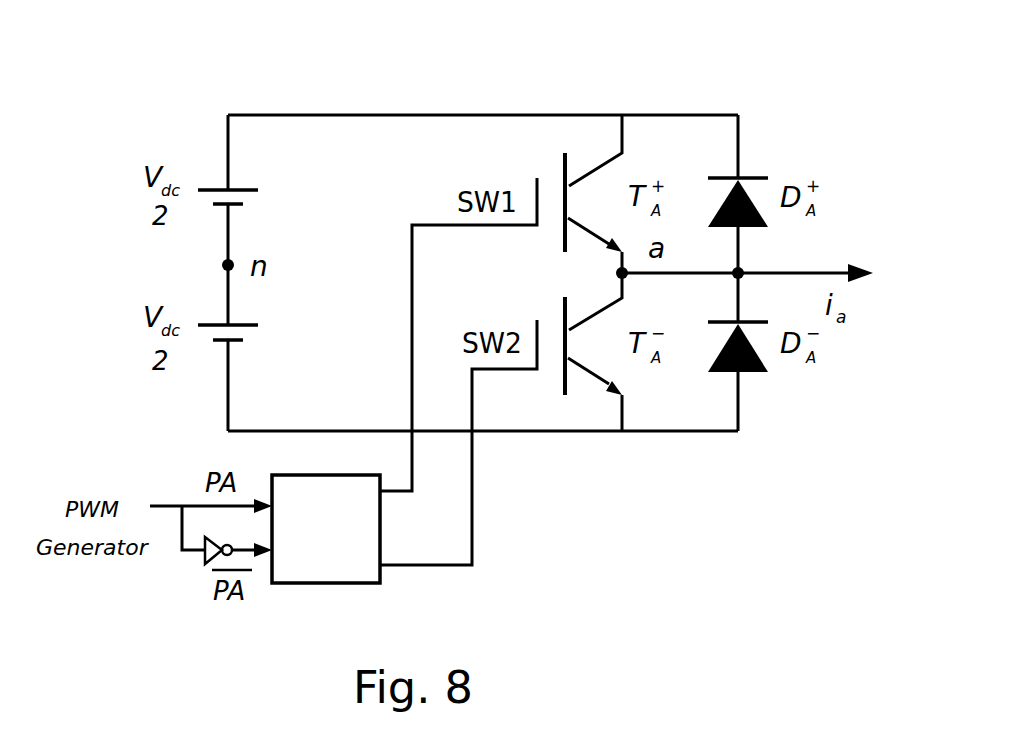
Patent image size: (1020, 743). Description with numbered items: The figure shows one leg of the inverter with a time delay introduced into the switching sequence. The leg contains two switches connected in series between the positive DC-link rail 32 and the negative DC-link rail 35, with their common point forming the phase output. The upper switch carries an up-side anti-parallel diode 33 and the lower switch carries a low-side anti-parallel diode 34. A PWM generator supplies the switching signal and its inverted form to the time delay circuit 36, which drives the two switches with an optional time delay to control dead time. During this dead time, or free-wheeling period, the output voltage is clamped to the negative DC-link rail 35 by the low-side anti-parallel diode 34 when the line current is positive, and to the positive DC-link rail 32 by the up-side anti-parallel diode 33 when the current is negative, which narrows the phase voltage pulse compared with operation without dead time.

The positive DC-link rail 32 is at (538, 115).
The up-side anti-parallel diode 33 is at (738, 178).
The low-side anti-parallel diode 34 is at (738, 322).
The negative DC-link rail 35 is at (565, 433).
The time delay circuit 36 is at (308, 475).